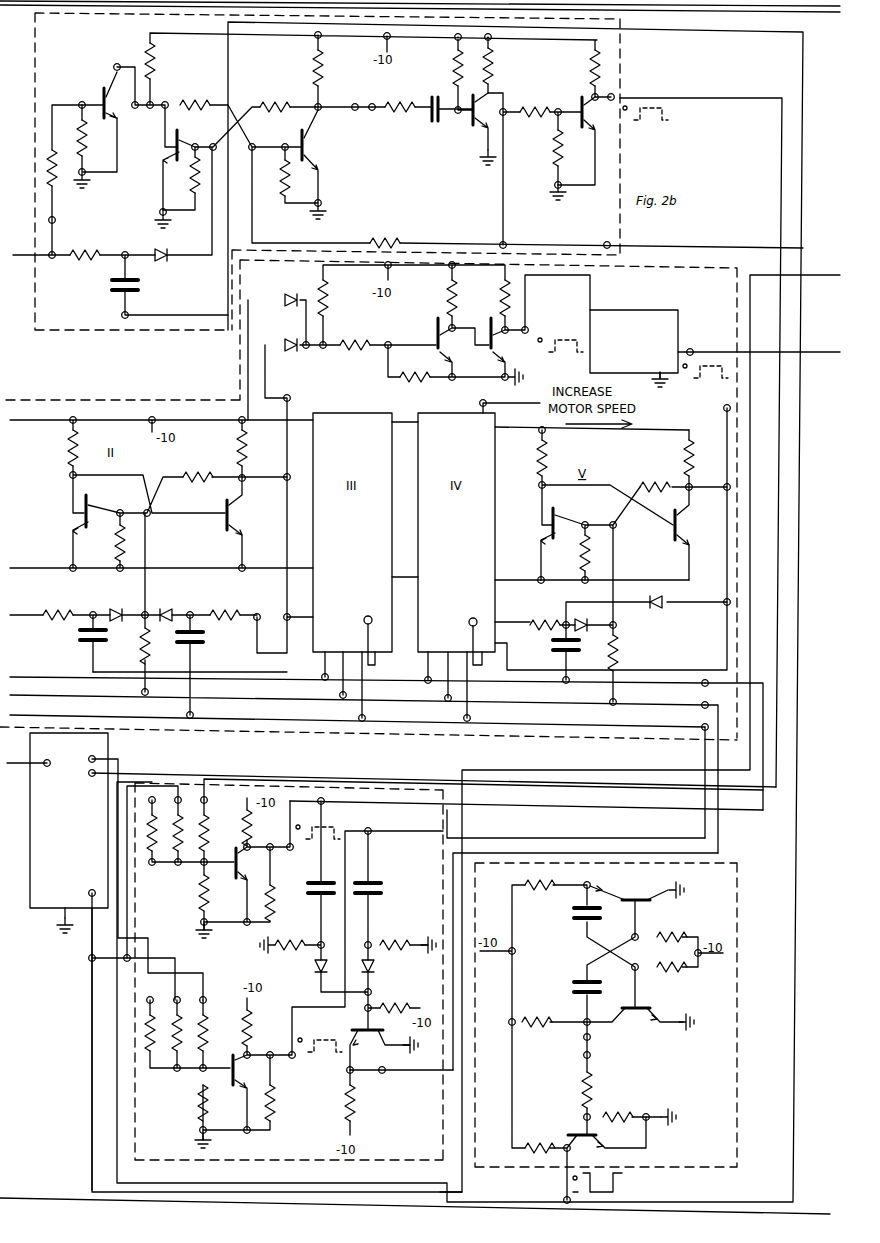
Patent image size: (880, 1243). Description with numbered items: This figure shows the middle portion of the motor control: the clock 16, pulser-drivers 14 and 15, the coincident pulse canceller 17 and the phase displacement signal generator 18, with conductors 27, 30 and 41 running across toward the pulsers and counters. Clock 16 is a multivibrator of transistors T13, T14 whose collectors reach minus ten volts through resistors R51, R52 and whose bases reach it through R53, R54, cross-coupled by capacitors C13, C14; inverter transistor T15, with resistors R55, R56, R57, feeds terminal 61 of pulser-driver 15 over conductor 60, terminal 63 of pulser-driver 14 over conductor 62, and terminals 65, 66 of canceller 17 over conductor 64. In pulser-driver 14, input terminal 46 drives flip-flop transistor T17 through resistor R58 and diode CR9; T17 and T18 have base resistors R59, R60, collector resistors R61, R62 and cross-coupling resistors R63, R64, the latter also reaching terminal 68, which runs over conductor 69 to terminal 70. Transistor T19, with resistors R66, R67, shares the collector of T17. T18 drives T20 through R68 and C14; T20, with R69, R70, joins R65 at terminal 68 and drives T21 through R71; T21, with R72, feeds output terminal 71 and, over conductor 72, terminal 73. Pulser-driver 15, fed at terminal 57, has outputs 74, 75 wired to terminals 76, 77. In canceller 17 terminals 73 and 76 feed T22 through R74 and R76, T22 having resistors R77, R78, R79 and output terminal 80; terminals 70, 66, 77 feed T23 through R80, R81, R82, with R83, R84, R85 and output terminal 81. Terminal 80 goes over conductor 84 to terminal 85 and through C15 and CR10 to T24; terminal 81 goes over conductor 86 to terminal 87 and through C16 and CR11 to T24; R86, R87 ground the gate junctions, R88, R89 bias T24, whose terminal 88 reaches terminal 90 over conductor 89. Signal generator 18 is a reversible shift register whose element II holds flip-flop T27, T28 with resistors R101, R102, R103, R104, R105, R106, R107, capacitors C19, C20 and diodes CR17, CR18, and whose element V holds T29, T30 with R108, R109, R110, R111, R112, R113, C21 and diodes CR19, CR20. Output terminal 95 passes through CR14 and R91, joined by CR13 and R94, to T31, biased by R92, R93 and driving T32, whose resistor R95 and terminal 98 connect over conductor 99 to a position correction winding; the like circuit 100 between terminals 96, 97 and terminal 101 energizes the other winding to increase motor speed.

The pulser-driver 14 is at (147, 336).
The pulser-driver 15 is at (69, 820).
The clock 16 is at (735, 1078).
The coincident pulse canceller 17 is at (272, 1162).
The phase displacement signal generator 18 is at (368, 738).
The conductor 27 is at (828, 7).
The conductor 30 is at (773, 14).
The conductor 41 is at (67, 1199).
The input terminal 46 is at (52, 268).
The input terminal 57 is at (47, 767).
The conductor 60 is at (486, 1200).
The input terminal 61 is at (88, 892).
The conductor 62 is at (737, 32).
The input terminal 63 is at (121, 316).
The conductor 64 is at (130, 912).
The input terminal 65 is at (179, 785).
The input terminal 66 is at (183, 992).
The terminal 68 is at (606, 241).
The conductor 69 is at (742, 445).
The input terminal 70 is at (211, 992).
The output terminal 71 is at (615, 95).
The conductor 72 is at (782, 126).
The input terminal 73 is at (204, 777).
The output terminal 74 is at (422, 782).
The output terminal 75 is at (88, 757).
The input terminal 76 is at (153, 785).
The input terminal 77 is at (156, 992).
The output terminal 80 is at (295, 859).
The output terminal 81 is at (303, 1063).
The conductor 84 is at (526, 802).
The input terminal 85 is at (700, 685).
The conductor 86 is at (576, 824).
The second input terminal 87 is at (702, 732).
The output terminal 88 is at (385, 1073).
The conductor 89 is at (720, 852).
The third input terminal 90 is at (700, 707).
The output terminal 95 is at (291, 396).
The output terminal 96 is at (480, 404).
The output terminal 97 is at (723, 409).
The output terminal 98 is at (538, 322).
The conductor 99 is at (752, 272).
The transistor amplifier-inverter circuit 100 is at (634, 341).
The output terminal 101 is at (691, 348).
The resistor R51 is at (537, 897).
The resistor R52 is at (535, 1035).
The resistor R53 is at (680, 928).
The resistor R54 is at (677, 980).
The resistor R55 is at (639, 1110).
The resistor R56 is at (537, 1138).
The resistor R57 is at (606, 1090).
The resistor R58 is at (85, 246).
The resistor R59 is at (184, 182).
The resistor R60 is at (270, 182).
The resistor R61 is at (167, 61).
The resistor R62 is at (299, 68).
The resistor R63 is at (270, 99).
The resistor R64 is at (195, 96).
The resistor R65 is at (387, 232).
The resistor R66 is at (64, 183).
The resistor R67 is at (93, 143).
The resistor R68 is at (395, 99).
The resistor R69 is at (439, 68).
The resistor R70 is at (504, 66).
The resistor R71 is at (533, 104).
The resistor R72 is at (573, 68).
The resistor R74 is at (218, 833).
The resistor R76 is at (148, 851).
The resistor R77 is at (218, 893).
The resistor R78 is at (262, 828).
The resistor R79 is at (284, 903).
The resistor R80 is at (213, 1041).
The resistor R81 is at (186, 1041).
The resistor R82 is at (158, 1041).
The resistor R83 is at (218, 1107).
The resistor R84 is at (262, 1028).
The resistor R85 is at (286, 1103).
The resistor R86 is at (284, 937).
The resistor R87 is at (408, 935).
The resistor R88 is at (398, 1002).
The resistor R89 is at (369, 1103).
The resistor R91 is at (358, 336).
The resistor R92 is at (411, 369).
The resistor R93 is at (432, 298).
The resistor R94 is at (339, 298).
The resistor R95 is at (489, 298).
The resistor R101 is at (51, 448).
The resistor R102 is at (190, 471).
The resistor R103 is at (225, 448).
The resistor R104 is at (100, 543).
The resistor R105 is at (51, 605).
The resistor R106 is at (128, 646).
The resistor R107 is at (233, 604).
The resistor R108 is at (564, 457).
The resistor R109 is at (649, 478).
The resistor R110 is at (668, 458).
The resistor R111 is at (567, 553).
The resistor R112 is at (533, 615).
The resistor R113 is at (633, 653).
The transistor T13 is at (640, 884).
The transistor T14 is at (656, 1028).
The inverter amplifier transistor T15 is at (585, 1151).
The transistor T17 is at (167, 171).
The transistor T18 is at (324, 155).
The transistor T19 is at (94, 95).
The transistor T20 is at (475, 129).
The transistor T21 is at (583, 148).
The transistor T22 is at (251, 864).
The transistor T23 is at (249, 1071).
The transistor T24 is at (384, 1050).
The transistor T27 is at (66, 514).
The transistor T28 is at (248, 517).
The transistor T29 is at (530, 526).
The transistor T30 is at (694, 527).
The transistor T31 is at (453, 340).
The transistor T32 is at (507, 340).
The capacitor C13 is at (338, 637).
The capacitor C14 is at (510, 515).
The capacitor C15 is at (328, 877).
The capacitor C16 is at (375, 877).
The capacitor C19 is at (74, 637).
The capacitor C20 is at (206, 641).
The capacitor C21 is at (547, 650).
The diode CR9 is at (173, 267).
The diode CR10 is at (302, 972).
The diode CR11 is at (387, 972).
The diode CR13 is at (274, 292).
The diode CR14 is at (274, 336).
The diode CR17 is at (113, 605).
The diode CR18 is at (168, 605).
The diode CR19 is at (586, 618).
The diode CR20 is at (674, 613).